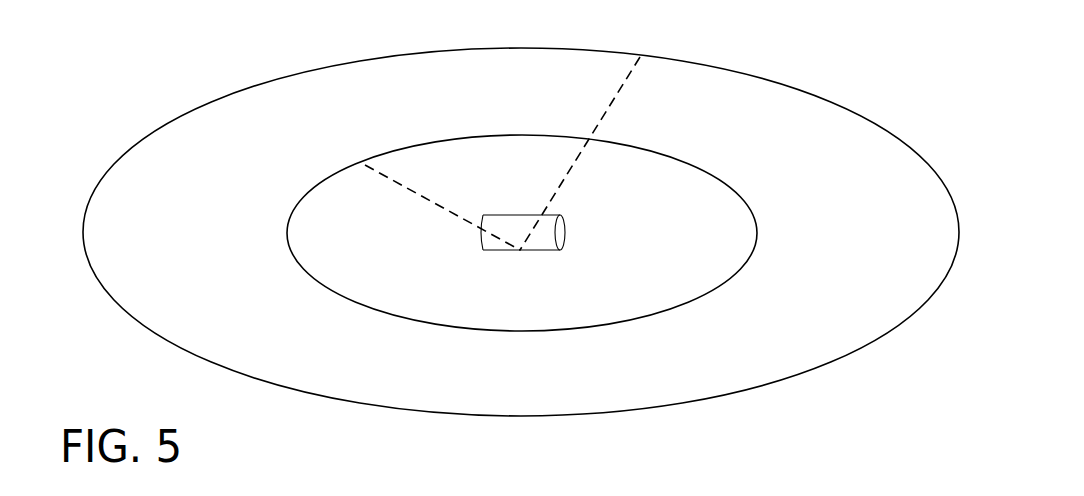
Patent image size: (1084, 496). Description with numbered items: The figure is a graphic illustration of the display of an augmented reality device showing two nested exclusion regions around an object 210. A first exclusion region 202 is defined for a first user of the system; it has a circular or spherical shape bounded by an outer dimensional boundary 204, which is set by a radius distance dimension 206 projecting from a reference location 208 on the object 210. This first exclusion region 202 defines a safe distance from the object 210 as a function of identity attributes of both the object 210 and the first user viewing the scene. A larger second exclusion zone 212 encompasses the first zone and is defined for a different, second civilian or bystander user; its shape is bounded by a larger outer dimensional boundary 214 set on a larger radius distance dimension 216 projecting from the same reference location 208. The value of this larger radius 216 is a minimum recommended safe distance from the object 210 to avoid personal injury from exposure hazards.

The first exclusion region 202 is at (345, 263).
The outer dimensional boundary 204 is at (317, 185).
The radius distance dimension 206 is at (408, 190).
The reference location 208 is at (520, 250).
The object 210 is at (558, 233).
The second exclusion zone 212 is at (825, 132).
The larger outer dimensional boundary 214 is at (750, 73).
The larger radius distance dimension 216 is at (610, 104).